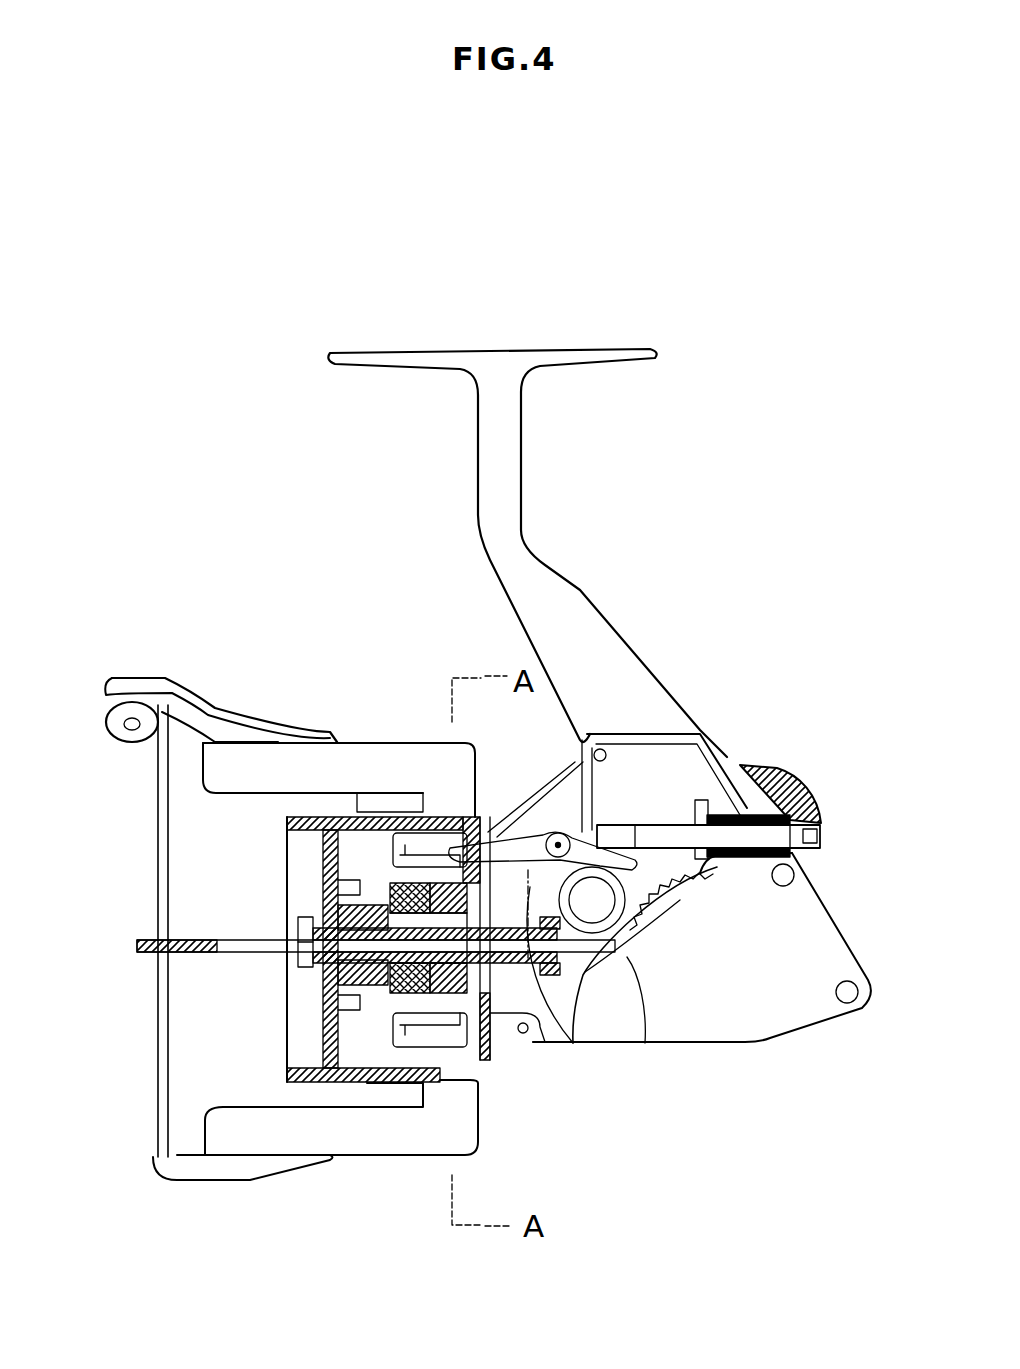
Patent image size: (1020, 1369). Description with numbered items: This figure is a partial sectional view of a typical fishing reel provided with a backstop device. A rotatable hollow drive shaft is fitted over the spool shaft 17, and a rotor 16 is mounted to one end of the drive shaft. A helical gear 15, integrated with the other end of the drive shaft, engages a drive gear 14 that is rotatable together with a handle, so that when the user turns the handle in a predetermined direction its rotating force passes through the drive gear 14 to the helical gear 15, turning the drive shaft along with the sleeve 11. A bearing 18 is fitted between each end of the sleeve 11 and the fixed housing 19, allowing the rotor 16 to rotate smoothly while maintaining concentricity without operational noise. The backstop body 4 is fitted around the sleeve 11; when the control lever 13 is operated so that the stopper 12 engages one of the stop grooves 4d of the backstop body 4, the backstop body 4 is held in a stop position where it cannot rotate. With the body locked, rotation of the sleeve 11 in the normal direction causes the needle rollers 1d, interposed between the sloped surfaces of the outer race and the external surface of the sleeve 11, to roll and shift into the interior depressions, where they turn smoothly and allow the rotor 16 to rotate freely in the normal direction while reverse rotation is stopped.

The needle rollers 1d is at (340, 905).
The backstop body 4 is at (433, 812).
The stop grooves 4d is at (512, 825).
The sleeve 11 is at (503, 1045).
The stopper 12 is at (443, 870).
The control lever 13 is at (800, 785).
The drive gear 14 is at (602, 912).
The helical gear 15 is at (560, 950).
The rotor 16 is at (402, 1140).
The spool shaft 17 is at (145, 950).
The bearing 18 is at (390, 1012).
The fixed housing 19 is at (390, 845).